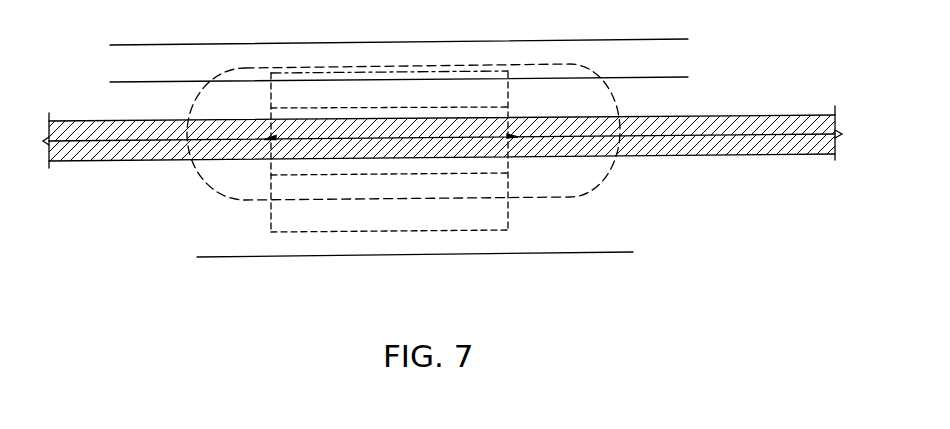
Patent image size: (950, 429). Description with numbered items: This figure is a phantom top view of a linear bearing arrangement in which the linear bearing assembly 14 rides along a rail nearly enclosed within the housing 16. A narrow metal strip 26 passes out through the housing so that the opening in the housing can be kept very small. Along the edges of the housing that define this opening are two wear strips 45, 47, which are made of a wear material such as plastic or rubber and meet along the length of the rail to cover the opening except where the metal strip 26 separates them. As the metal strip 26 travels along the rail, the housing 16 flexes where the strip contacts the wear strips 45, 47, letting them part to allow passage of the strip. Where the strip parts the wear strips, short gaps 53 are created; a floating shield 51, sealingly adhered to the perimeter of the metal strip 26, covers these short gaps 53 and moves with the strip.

The linear bearing assembly 14 is at (270, 218).
The housing 16 is at (228, 45).
The metal strip 26 is at (392, 137).
The wear strip 45 is at (594, 125).
The wear strip 47 is at (722, 118).
The floating shield 51 is at (200, 178).
The short gaps 53 is at (292, 140).